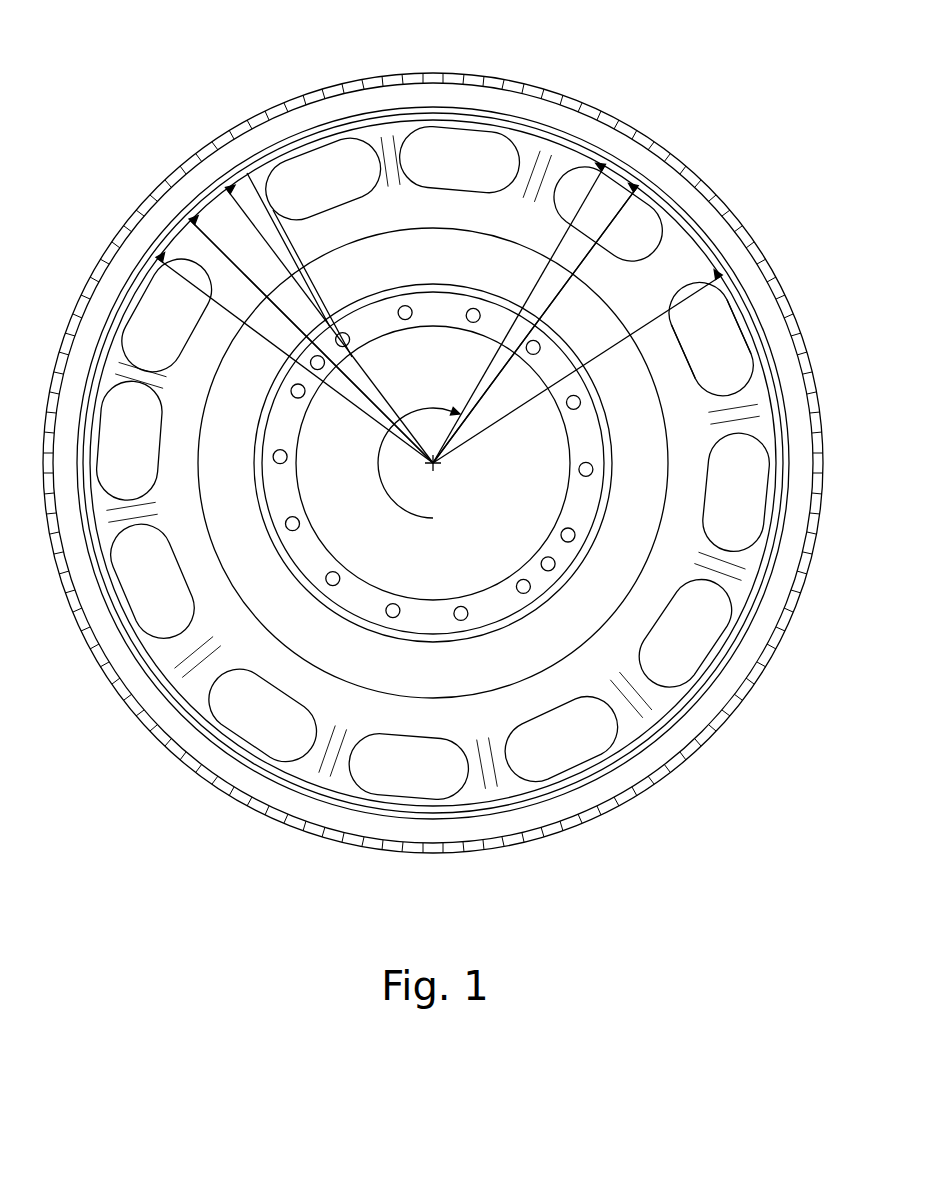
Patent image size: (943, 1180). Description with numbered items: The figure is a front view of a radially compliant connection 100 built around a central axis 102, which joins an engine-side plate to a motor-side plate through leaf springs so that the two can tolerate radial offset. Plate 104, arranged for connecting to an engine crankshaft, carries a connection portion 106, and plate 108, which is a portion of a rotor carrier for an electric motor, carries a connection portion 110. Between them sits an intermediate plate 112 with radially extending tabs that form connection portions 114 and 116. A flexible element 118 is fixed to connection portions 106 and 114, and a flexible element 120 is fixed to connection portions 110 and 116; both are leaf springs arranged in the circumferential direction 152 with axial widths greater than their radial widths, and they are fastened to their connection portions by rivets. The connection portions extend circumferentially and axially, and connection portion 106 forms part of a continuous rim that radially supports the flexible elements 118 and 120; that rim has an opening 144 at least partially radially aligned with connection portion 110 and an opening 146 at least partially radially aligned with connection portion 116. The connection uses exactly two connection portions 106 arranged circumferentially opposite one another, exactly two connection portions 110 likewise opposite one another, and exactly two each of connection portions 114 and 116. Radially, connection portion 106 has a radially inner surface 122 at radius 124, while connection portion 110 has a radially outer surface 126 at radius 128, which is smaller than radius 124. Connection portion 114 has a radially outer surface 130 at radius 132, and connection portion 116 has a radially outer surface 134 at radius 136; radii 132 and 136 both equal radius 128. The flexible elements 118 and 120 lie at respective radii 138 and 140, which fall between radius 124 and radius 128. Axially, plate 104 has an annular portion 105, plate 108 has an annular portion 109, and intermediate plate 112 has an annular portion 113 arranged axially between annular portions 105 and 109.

The radially compliant connection 100 is at (133, 131).
The axis 102 is at (437, 466).
The plate 104 is at (485, 100).
The annular portion 105 is at (365, 715).
The connection portion 106 is at (640, 182).
The plate 108 is at (362, 245).
The annular portion 109 is at (267, 583).
The connection portion 110 is at (263, 207).
The intermediate plate 112 is at (655, 197).
The annular portion 113 is at (270, 663).
The connection portion 114 is at (712, 265).
The connection portion 116 is at (148, 232).
The flexible element 118 is at (700, 245).
The flexible element 120 is at (152, 198).
The radially inner surface 122 is at (572, 150).
The radius 124 is at (480, 377).
The radially outer surface 126 is at (240, 165).
The radius 128 is at (358, 358).
The radially outer surface 130 is at (735, 262).
The radius 132 is at (488, 433).
The radially outer surface 134 is at (128, 268).
The radius 136 is at (368, 418).
The radius 138 is at (508, 380).
The radius 140 is at (353, 387).
The opening 144 is at (217, 177).
The opening 146 is at (155, 258).
The circumferential direction 152 is at (410, 518).